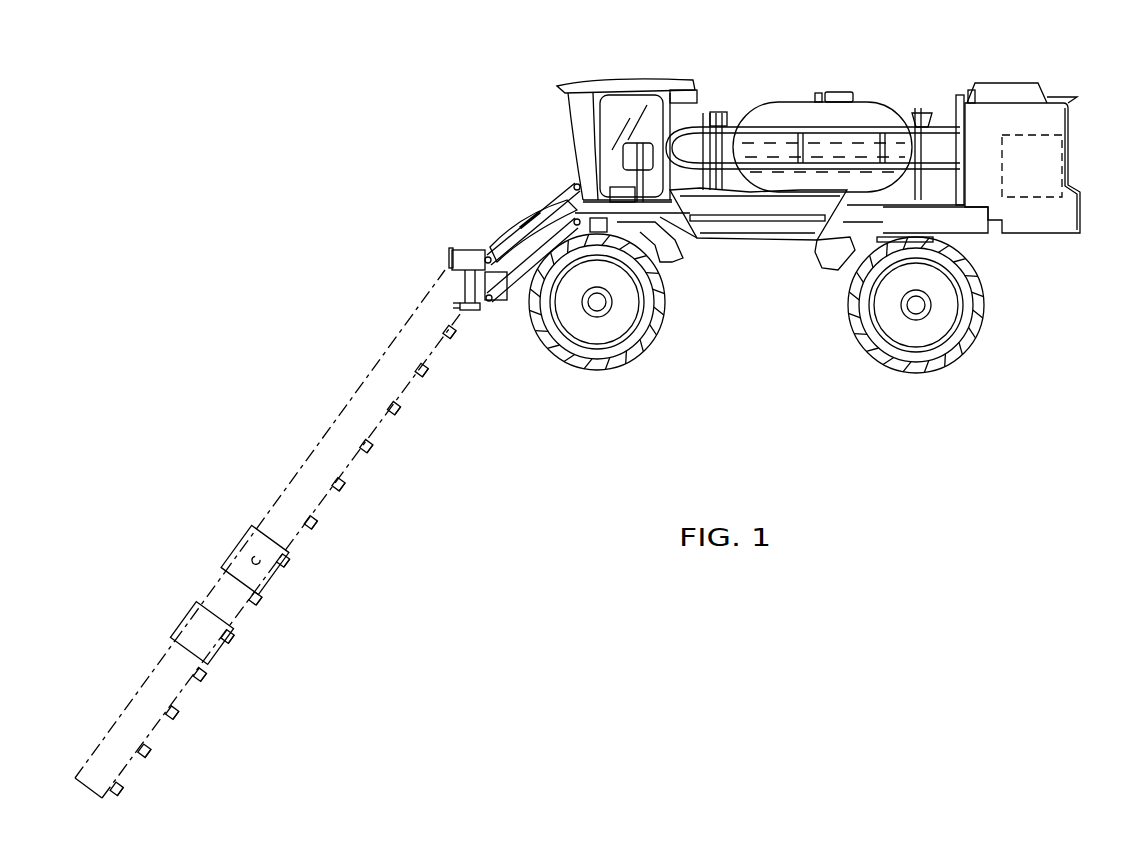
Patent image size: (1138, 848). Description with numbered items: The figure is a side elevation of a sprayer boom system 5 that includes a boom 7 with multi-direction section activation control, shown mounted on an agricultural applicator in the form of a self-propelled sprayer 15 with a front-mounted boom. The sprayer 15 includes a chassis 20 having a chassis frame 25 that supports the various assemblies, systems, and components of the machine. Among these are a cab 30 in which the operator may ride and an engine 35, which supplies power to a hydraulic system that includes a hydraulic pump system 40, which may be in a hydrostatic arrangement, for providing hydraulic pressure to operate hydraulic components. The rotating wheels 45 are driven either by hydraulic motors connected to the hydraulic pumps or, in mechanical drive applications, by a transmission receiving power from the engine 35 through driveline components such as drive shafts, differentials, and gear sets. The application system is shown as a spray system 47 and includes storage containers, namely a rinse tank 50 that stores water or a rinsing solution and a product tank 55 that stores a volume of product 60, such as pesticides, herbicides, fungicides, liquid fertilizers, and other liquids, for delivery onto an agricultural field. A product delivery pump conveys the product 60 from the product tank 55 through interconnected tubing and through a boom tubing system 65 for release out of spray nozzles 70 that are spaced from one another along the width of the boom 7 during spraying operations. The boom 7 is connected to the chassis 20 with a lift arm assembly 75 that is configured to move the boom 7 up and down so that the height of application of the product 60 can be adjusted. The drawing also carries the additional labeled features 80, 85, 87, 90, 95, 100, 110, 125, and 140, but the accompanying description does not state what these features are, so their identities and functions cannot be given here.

The sprayer boom system 5 is at (205, 382).
The boom 7 is at (338, 453).
The self-propelled sprayer 15 is at (822, 52).
The chassis 20 is at (773, 248).
The chassis frame 25 is at (830, 256).
The cab 30 is at (637, 70).
The engine 35 is at (1038, 152).
The hydraulic pump system 40 is at (983, 170).
The wheels 45 is at (634, 366).
The spray system 47 is at (885, 92).
The rinse tank 50 is at (922, 113).
The product tank 55 is at (790, 90).
The product 60 is at (766, 145).
The boom tubing system 65 is at (402, 416).
The spray nozzles 70 is at (345, 487).
The lift arm assembly 75 is at (558, 190).
The spray pattern 80 is at (293, 375).
The lift arm 85 is at (465, 228).
The boom extension direction 87 is at (432, 540).
The inner boom section 90 is at (343, 375).
The middle boom section 95 is at (225, 558).
The outer boom section 100 is at (143, 683).
The boom hinge 110 is at (460, 283).
The first fold joint 125 is at (283, 585).
The second fold joint 140 is at (222, 657).